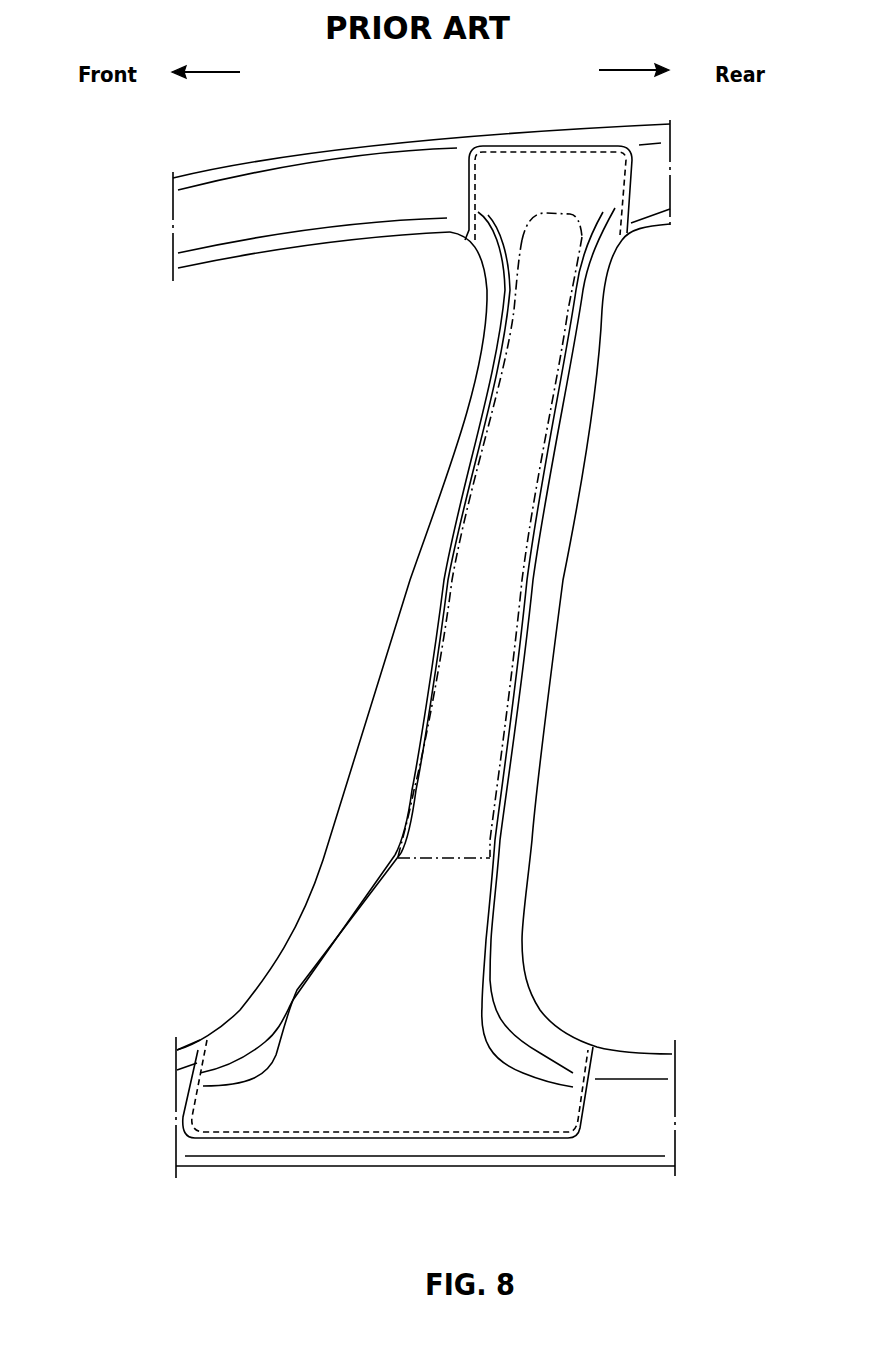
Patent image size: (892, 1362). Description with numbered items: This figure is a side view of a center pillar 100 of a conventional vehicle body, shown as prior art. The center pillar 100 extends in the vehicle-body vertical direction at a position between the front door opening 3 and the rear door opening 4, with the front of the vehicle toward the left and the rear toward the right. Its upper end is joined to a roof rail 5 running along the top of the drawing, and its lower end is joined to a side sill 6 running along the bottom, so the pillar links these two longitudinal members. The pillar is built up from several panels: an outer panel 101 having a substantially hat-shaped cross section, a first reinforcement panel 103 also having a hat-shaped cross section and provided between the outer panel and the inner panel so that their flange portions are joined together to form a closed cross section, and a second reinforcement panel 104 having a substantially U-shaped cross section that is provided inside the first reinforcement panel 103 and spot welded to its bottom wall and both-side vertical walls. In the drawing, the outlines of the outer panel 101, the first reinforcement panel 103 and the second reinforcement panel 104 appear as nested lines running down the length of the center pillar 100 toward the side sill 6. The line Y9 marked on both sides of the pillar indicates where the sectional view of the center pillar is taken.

The front door opening 3 is at (273, 515).
The rear door opening 4 is at (738, 515).
The roof rail 5 is at (359, 148).
The side sill 6 is at (398, 1166).
The center pillar 100 is at (537, 830).
The outer panel 101 is at (470, 938).
The first reinforcement panel 103 is at (584, 1050).
The second reinforcement panel 104 is at (423, 860).
The section line Y9- Y9 is at (416, 497).